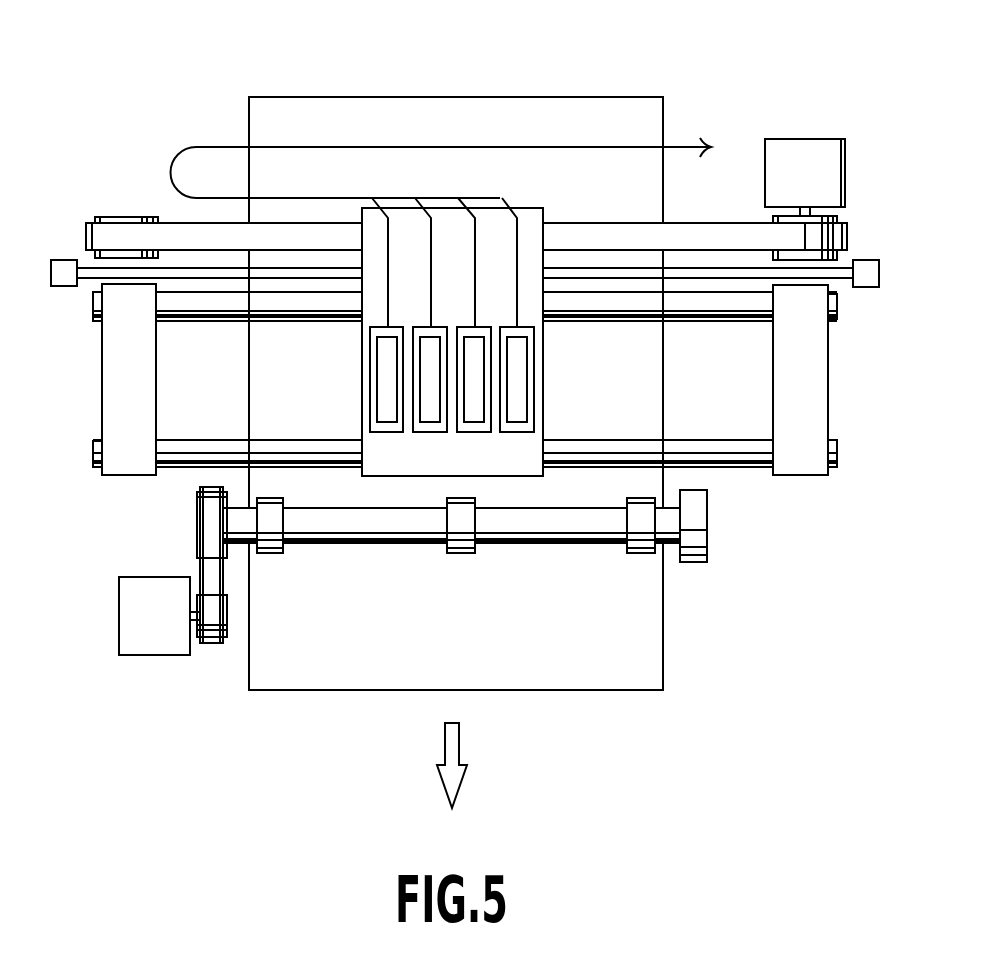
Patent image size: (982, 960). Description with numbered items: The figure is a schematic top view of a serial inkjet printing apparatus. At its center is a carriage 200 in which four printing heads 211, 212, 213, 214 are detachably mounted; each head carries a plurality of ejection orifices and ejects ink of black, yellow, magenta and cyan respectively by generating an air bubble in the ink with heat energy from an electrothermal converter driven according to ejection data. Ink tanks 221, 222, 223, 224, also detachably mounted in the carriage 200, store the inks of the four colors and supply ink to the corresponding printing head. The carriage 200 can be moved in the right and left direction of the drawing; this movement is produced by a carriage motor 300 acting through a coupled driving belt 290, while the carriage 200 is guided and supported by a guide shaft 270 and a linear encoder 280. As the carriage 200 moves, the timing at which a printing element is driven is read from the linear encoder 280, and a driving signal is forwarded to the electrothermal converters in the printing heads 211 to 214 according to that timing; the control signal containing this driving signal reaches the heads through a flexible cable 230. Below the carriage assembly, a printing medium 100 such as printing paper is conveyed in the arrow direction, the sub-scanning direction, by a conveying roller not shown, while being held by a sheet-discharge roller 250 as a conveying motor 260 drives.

The printing medium 100 is at (330, 97).
The flexible cable 230 is at (193, 146).
The linear encoder 280 is at (85, 280).
The driving belt 290 is at (110, 217).
The carriage motor 300 is at (797, 147).
The guide shaft 270 is at (205, 310).
The carriage 200 is at (360, 362).
The printing head 211 is at (390, 432).
The printing head 212 is at (433, 432).
The printing head 213 is at (477, 432).
The printing head 214 is at (520, 432).
The ink tank 221 is at (515, 387).
The ink tank 222 is at (472, 403).
The ink tank 223 is at (430, 403).
The ink tank 224 is at (385, 387).
The sheet-discharge roller 250 is at (342, 550).
The conveying motor 260 is at (173, 610).